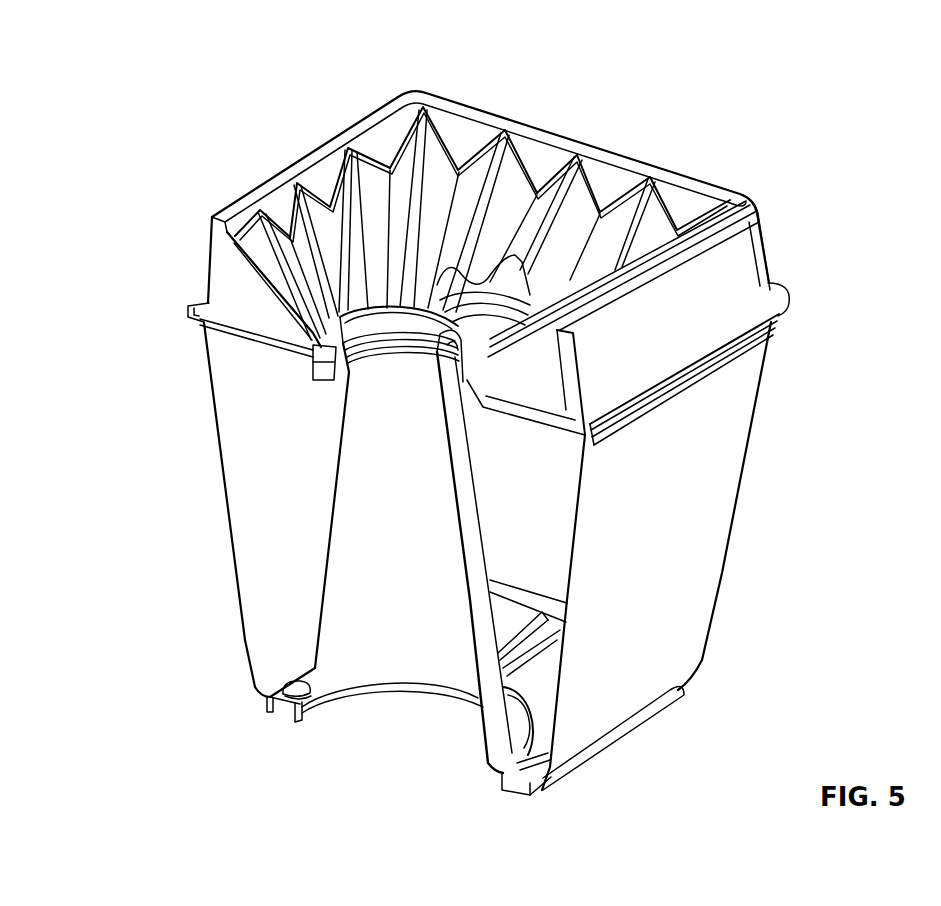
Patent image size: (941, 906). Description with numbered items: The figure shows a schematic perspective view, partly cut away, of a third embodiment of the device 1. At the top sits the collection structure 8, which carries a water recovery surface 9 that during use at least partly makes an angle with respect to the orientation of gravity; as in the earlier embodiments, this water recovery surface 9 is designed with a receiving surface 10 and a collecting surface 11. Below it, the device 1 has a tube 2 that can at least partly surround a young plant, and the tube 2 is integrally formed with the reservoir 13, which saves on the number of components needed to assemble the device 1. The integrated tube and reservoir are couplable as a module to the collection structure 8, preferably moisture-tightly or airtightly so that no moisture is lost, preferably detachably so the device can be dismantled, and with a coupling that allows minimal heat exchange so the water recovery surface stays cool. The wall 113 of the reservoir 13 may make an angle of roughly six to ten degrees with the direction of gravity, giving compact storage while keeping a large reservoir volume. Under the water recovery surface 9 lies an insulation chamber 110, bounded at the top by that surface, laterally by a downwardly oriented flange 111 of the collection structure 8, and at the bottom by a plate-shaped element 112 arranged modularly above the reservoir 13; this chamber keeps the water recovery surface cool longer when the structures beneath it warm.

The device 1 is at (817, 183).
The tube 2 is at (470, 615).
The collection structure 8 is at (233, 178).
The water recovery surface 9 is at (487, 190).
The receiving surface 10 is at (503, 193).
The collecting surface 11 is at (455, 185).
The reservoir 13 is at (520, 545).
The insulation chamber 110 is at (540, 398).
The downwardly oriented flange 111 is at (768, 252).
The plate-shaped element 112 is at (545, 425).
The wall 113 is at (722, 575).